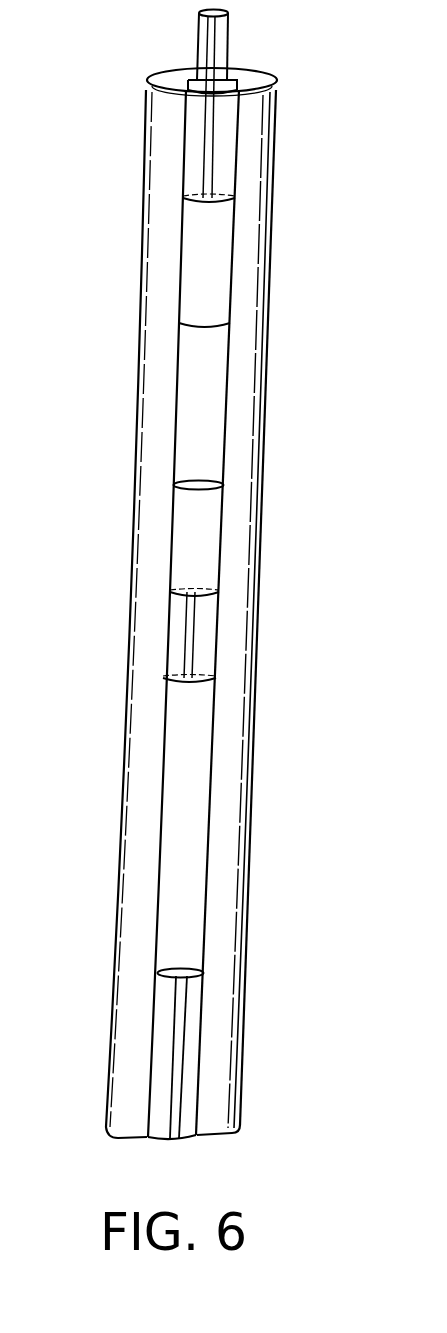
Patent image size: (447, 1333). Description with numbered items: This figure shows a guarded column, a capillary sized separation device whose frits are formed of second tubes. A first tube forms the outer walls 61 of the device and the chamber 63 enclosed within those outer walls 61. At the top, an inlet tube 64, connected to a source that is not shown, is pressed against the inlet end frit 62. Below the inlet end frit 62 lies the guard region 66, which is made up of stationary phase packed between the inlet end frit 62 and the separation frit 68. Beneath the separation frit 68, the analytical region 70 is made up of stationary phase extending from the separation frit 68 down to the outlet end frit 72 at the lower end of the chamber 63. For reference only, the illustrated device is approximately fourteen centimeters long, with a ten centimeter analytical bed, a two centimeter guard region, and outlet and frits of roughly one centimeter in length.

The outer walls 61 is at (148, 133).
The inlet end frit 62 is at (277, 130).
The chamber 63 is at (182, 882).
The inlet tube 64 is at (230, 42).
The guard region 66 is at (200, 378).
The separation frit 68 is at (200, 543).
The analytical region 70 is at (232, 720).
The outlet end frit 72 is at (247, 1035).